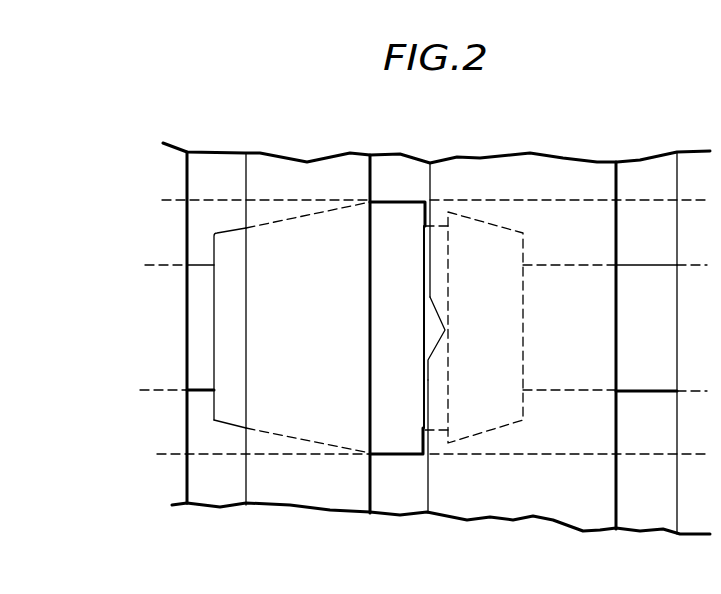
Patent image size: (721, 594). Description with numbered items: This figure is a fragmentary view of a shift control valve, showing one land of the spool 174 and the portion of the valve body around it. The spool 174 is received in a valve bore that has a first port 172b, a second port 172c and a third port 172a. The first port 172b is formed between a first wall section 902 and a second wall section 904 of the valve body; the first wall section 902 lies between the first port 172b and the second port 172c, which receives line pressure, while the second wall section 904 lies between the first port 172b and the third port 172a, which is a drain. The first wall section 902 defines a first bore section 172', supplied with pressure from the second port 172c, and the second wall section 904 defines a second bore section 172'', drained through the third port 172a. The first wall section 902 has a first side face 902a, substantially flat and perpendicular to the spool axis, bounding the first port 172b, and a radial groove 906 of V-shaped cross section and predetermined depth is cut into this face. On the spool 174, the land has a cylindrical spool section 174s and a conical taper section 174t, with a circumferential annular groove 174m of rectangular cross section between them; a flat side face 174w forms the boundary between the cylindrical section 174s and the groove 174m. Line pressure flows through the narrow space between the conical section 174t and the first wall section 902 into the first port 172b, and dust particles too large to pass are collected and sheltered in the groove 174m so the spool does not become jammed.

The third port 172a is at (212, 163).
The first port 172b is at (402, 167).
The second port 172c is at (647, 167).
The first bore section 172' is at (517, 323).
The second bore section 172'' is at (280, 327).
The second wall section 904 is at (312, 168).
The first wall section 902 is at (523, 167).
The first side face 902a is at (430, 180).
The radial groove 906 is at (440, 317).
The spool 174 is at (157, 390).
The cylindrical spool section 174s is at (395, 444).
The circumferential annular groove 174m is at (432, 431).
The conical taper section 174t is at (507, 428).
The side face 174w is at (426, 456).